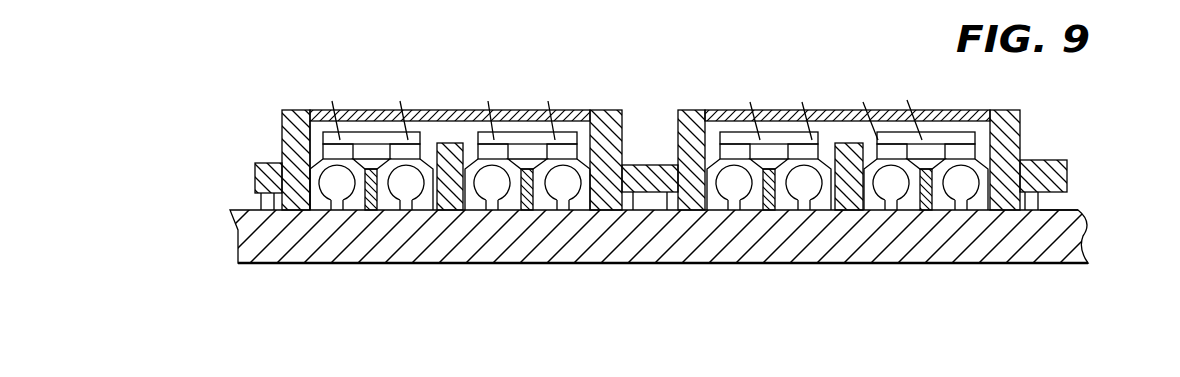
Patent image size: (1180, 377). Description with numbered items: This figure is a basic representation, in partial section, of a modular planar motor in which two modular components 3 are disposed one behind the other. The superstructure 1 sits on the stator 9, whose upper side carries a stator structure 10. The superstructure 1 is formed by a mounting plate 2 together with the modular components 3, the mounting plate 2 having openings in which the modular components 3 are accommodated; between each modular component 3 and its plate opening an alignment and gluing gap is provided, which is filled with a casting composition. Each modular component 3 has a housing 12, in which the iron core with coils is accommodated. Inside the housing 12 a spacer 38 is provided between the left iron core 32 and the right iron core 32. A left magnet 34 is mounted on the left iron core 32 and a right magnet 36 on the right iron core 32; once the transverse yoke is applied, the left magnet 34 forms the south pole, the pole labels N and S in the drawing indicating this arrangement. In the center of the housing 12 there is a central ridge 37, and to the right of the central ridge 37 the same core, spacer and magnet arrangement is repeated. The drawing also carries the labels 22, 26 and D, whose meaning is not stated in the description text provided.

The superstructure 1 is at (1093, 285).
The mounting plate 2 is at (256, 173).
The modular component 3 is at (708, 110).
The stator 9 is at (970, 246).
The stator structure 10 is at (1075, 212).
The housing 12 is at (960, 110).
The contact member 22 is at (237, 232).
The cover plate 26 is at (740, 110).
The iron core 32 is at (340, 202).
The left magnet 34 is at (318, 200).
The right magnet 36 is at (379, 212).
The central ridge 37 is at (450, 212).
The spacer 38 is at (372, 208).
The dimension D is at (310, 150).